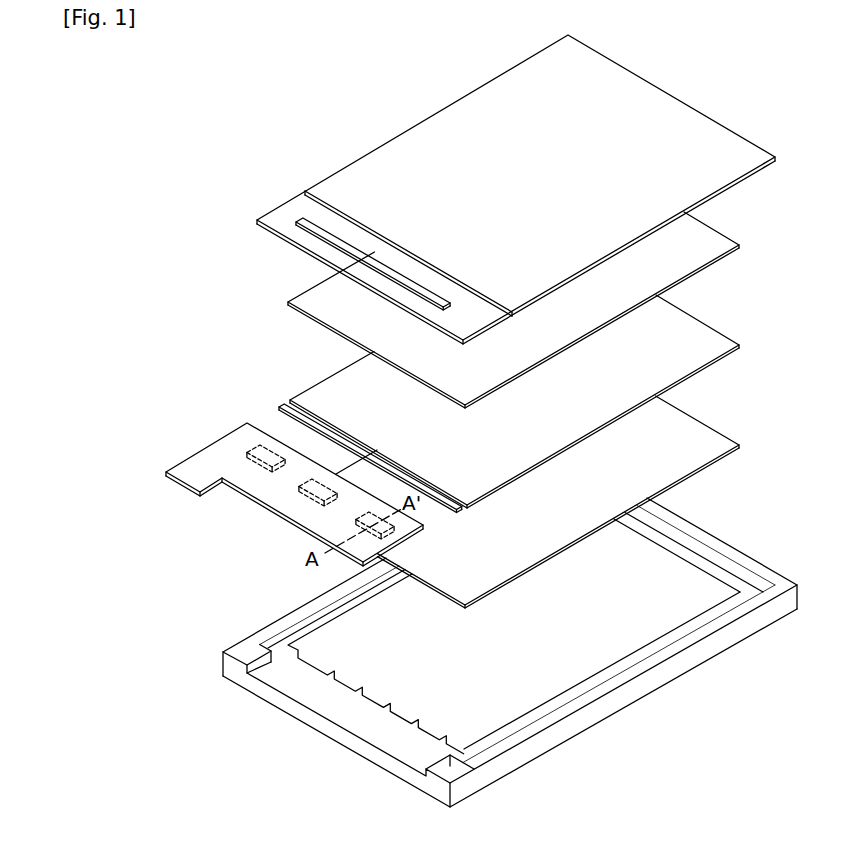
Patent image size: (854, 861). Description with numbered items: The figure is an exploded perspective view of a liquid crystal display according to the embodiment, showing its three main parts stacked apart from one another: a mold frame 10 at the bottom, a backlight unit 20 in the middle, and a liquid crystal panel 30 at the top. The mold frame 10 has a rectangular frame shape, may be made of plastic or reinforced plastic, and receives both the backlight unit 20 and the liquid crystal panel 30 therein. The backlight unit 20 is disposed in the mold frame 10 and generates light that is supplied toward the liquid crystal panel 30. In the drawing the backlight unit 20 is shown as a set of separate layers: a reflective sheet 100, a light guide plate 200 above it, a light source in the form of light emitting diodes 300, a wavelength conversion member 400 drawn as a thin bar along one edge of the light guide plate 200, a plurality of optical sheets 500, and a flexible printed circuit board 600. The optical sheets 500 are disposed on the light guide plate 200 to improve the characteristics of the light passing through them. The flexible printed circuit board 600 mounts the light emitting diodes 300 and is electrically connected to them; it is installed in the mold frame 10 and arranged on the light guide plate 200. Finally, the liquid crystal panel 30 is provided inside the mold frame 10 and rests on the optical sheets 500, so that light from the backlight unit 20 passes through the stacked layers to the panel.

The mold frame 10 is at (232, 631).
The backlight unit 20 is at (105, 352).
The liquid crystal panel 30 is at (341, 190).
The reflective sheet 100 is at (450, 583).
The light guide plate 200 is at (325, 403).
The light emitting diodes 300 is at (262, 470).
The wavelength conversion member 400 is at (275, 410).
The optical sheets 500 is at (357, 322).
The flexible printed circuit board 600 is at (240, 438).